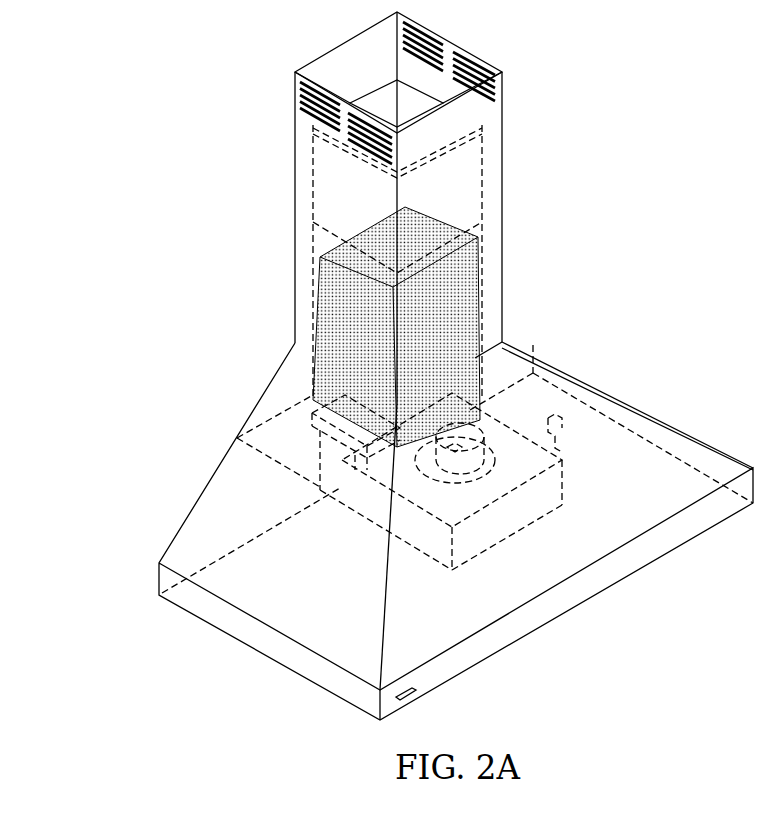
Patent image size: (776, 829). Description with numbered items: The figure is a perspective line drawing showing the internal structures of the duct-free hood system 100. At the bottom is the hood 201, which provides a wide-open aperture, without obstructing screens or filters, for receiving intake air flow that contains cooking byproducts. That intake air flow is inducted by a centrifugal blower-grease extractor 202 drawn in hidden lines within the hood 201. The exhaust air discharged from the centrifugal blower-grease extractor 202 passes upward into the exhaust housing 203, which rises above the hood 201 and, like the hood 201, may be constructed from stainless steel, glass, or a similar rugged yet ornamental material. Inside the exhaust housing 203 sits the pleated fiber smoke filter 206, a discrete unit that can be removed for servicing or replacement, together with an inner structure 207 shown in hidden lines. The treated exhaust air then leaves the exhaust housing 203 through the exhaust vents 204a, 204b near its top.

The duct-free hood system 100 is at (200, 257).
The hood 201 is at (646, 405).
The centrifugal blower-grease extractor 202 is at (496, 533).
The exhaust housing 203 is at (500, 203).
The exhaust vent 204a is at (308, 122).
The exhaust vent 204b is at (417, 66).
The pleated fiber smoke filter 206 is at (488, 292).
The inner duct 207 is at (487, 172).